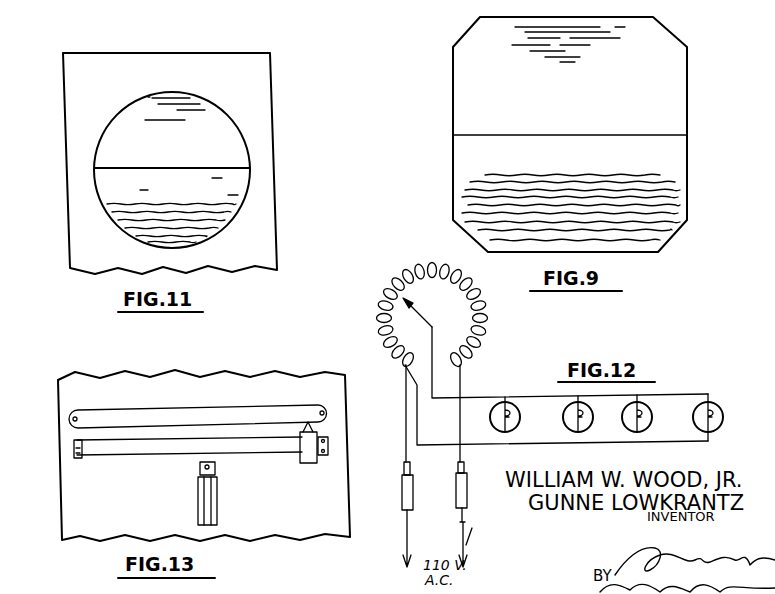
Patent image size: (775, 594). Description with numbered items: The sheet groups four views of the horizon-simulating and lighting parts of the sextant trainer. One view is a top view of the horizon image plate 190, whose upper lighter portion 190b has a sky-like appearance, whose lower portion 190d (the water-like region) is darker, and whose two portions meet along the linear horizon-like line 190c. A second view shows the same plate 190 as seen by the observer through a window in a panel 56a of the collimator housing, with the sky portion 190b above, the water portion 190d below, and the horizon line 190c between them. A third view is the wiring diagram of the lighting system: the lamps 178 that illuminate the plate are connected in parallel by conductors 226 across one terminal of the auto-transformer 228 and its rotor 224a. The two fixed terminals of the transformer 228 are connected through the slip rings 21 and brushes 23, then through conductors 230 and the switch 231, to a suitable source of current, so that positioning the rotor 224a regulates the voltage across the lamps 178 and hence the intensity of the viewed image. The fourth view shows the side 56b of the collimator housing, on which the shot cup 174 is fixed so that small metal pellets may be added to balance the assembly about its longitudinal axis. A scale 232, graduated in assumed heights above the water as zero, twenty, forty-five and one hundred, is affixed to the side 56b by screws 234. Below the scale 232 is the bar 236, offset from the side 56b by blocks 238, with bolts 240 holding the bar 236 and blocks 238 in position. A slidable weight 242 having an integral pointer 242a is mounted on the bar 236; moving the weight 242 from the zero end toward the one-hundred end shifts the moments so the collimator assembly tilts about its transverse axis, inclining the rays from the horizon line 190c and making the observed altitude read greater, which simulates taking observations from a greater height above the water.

In FIG. 9, the horizon image plate 190 is at (462, 97).
In FIG. 9, the upper lighter portion 190b is at (676, 78).
In FIG. 11, the upper lighter portion 190b is at (238, 148).
In FIG. 9, the horizon-like line 190c is at (662, 134).
In FIG. 11, the horizon-like line 190c is at (97, 168).
In FIG. 9, the lower dark region of window 190d is at (676, 163).
In FIG. 11, the lower dark region of window 190d is at (240, 185).
In FIG. 11, the housing panel 56a is at (256, 100).
In FIG. 13, the left side of collimator housing 56b is at (336, 473).
In FIG. 12, the rotor 224a is at (417, 304).
In FIG. 12, the auto-transformer 228 is at (404, 299).
In FIG. 12, the conductors 226 is at (417, 397).
In FIG. 12, the lamps 178 is at (563, 417).
In FIG. 12, the brushes 23 is at (457, 463).
In FIG. 12, the slip rings 21 is at (456, 488).
In FIG. 12, the conductors 230 is at (460, 520).
In FIG. 12, the switch 231 is at (472, 538).
In FIG. 13, the scale 232 is at (198, 406).
In FIG. 13, the screws 234 is at (76, 416).
In FIG. 13, the bar 236 is at (253, 449).
In FIG. 13, the blocks 238 is at (74, 440).
In FIG. 13, the bolts 240 is at (79, 457).
In FIG. 13, the slidable weight 242 is at (305, 464).
In FIG. 13, the pointer 242a is at (311, 425).
In FIG. 13, the shot cup 174 is at (207, 498).